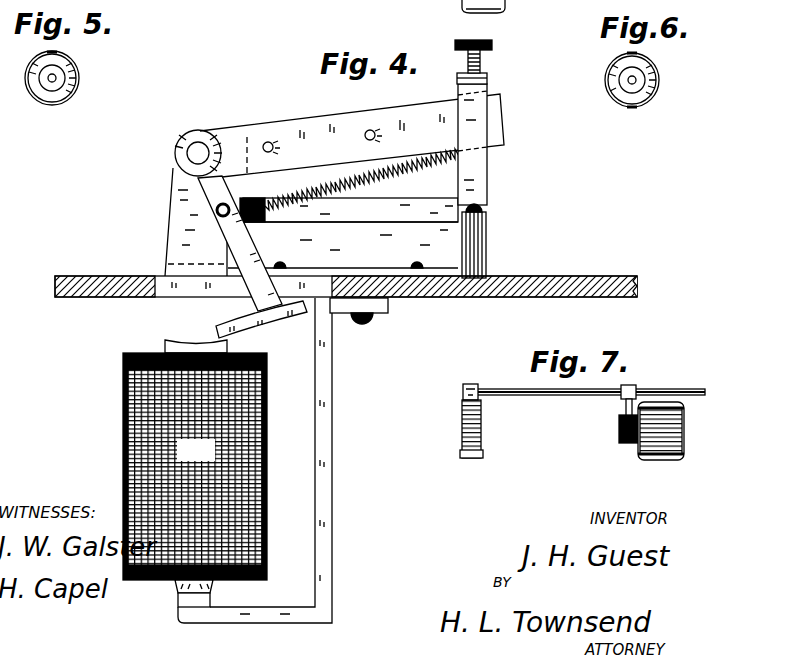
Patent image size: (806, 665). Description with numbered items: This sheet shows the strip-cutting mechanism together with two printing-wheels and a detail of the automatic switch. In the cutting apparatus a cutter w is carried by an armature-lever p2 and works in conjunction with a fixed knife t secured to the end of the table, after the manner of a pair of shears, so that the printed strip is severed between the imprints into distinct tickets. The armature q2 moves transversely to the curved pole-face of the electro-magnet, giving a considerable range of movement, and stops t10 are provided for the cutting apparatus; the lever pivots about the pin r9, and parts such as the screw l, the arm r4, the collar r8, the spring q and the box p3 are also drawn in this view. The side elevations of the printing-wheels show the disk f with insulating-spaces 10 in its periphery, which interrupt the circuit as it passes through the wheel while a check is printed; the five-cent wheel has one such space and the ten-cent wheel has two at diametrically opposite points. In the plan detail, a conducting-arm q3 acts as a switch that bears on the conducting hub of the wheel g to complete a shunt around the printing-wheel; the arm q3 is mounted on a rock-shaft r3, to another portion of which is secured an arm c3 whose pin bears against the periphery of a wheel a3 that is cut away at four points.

In FIG. 4, the pivot pin r9 is at (186, 153).
In FIG. 4, the screw l is at (216, 209).
In FIG. 4, the armature-lever p2 is at (248, 249).
In FIG. 4, the armature q2 is at (267, 323).
In FIG. 4, the grid plate p3 is at (195, 460).
In FIG. 4, the lever arm r4 is at (352, 135).
In FIG. 4, the stops t10 is at (493, 45).
In FIG. 4, the collar r8 is at (488, 80).
In FIG. 4, the spring q is at (373, 176).
In FIG. 4, the cutter w is at (492, 167).
In FIG. 4, the fixed knife t is at (350, 210).
In FIG. 5, the insulating-spaces 10 is at (58, 54).
In FIG. 6, the insulating-spaces 10 is at (639, 116).
In FIG. 5, the disk f is at (70, 78).
In FIG. 6, the disk f is at (658, 80).
In FIG. 7, the arm c3 is at (462, 395).
In FIG. 7, the wheel a3 is at (482, 421).
In FIG. 7, the rock-shaft r3 is at (570, 389).
In FIG. 7, the conducting-arm q3 is at (622, 408).
In FIG. 7, the wheel g is at (686, 428).